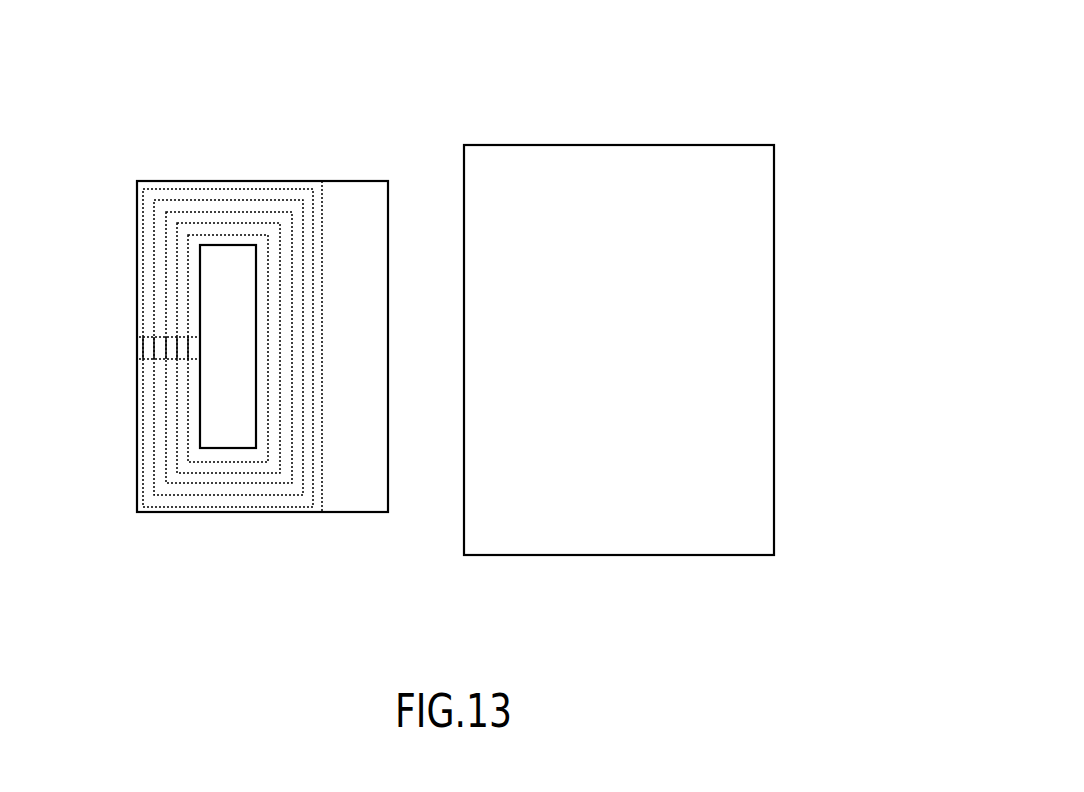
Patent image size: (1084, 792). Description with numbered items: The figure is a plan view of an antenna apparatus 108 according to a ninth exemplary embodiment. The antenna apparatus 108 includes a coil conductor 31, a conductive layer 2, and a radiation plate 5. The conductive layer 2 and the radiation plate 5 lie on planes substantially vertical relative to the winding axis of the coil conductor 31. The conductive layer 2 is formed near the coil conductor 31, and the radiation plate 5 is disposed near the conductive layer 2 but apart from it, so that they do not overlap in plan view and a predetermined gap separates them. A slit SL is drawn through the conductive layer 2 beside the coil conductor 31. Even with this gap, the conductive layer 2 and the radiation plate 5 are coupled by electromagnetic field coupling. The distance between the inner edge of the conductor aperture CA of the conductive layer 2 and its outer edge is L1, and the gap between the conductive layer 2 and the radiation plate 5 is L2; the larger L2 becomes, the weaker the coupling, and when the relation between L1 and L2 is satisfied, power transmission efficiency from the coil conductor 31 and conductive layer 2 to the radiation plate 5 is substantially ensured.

The antenna apparatus 108 is at (716, 40).
The conductive layer 2 is at (337, 185).
The coil conductor 31 is at (192, 276).
The conductor aperture CA is at (228, 263).
The slit SL is at (136, 348).
The distance between inner edge of conductor aperture and outer edge of conductive l L1 is at (256, 348).
The gap between conductive layer and radiation plate L2 is at (464, 348).
The radiation plate 5 is at (762, 319).